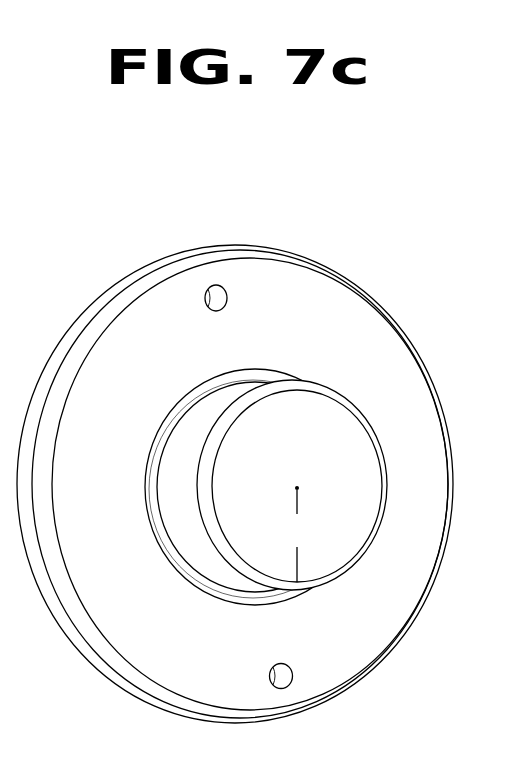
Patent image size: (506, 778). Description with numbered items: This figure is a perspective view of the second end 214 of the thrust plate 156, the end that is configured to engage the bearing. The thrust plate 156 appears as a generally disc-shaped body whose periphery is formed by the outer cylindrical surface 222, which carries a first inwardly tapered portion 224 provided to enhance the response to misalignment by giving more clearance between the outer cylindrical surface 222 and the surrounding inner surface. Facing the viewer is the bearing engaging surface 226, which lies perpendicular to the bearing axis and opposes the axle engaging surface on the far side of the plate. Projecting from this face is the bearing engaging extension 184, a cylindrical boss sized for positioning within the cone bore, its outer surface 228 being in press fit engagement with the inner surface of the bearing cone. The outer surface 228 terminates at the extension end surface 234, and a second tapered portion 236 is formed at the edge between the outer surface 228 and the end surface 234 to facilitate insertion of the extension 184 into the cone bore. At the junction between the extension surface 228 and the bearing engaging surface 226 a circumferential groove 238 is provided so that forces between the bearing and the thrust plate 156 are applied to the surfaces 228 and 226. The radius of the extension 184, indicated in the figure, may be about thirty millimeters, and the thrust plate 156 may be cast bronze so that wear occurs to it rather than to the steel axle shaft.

The second end 214 is at (253, 449).
The thrust plate 156 is at (235, 449).
The outer cylindrical surface 222 is at (181, 255).
The bearing engaging surface 226 is at (131, 343).
The first inwardly tapered portion 224 is at (236, 260).
The circumferential groove 238 is at (208, 387).
The outer surface 228 is at (245, 388).
The second tapered portion 236 is at (315, 388).
The extension end surface 234 is at (325, 425).
The bearing engaging extension 184 is at (347, 552).